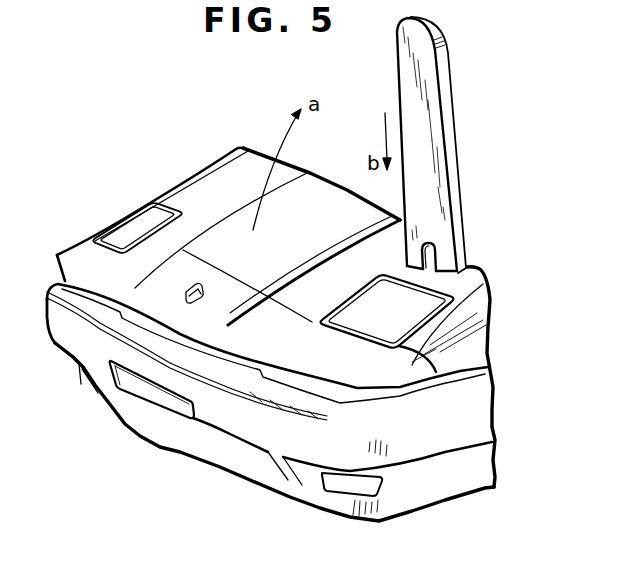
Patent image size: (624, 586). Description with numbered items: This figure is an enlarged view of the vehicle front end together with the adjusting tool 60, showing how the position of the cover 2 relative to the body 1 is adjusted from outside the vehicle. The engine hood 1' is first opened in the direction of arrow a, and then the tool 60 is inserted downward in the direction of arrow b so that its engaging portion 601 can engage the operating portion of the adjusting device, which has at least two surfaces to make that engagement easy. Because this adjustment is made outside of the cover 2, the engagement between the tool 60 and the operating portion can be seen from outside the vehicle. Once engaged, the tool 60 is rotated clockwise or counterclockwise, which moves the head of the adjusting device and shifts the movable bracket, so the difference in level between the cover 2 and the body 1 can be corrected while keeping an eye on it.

The body 1 is at (271, 337).
The engine hood 1' is at (228, 217).
The cover 2 is at (425, 318).
The adjusting tool 60 is at (435, 127).
The engaging portion 601 is at (435, 263).